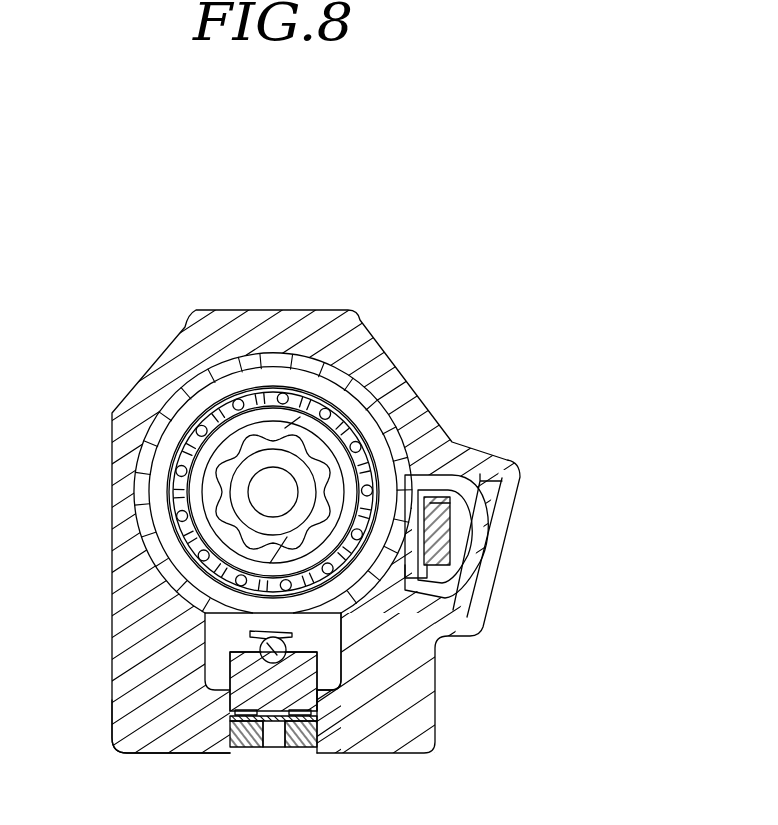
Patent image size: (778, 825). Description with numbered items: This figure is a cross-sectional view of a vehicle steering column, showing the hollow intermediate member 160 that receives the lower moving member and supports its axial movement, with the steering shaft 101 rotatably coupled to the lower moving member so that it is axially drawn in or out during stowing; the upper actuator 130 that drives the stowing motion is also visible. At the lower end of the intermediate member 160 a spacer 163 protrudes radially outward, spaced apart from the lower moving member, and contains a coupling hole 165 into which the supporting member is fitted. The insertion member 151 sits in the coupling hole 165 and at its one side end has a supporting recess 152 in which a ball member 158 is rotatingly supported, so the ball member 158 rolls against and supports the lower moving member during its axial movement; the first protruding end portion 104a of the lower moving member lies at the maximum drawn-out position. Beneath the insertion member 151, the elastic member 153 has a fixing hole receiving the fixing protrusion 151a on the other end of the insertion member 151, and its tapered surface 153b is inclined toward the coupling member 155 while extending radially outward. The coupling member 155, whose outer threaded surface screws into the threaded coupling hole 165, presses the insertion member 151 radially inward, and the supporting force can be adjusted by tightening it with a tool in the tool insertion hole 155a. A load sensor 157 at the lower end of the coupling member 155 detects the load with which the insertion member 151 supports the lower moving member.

The intermediate member 160 is at (150, 386).
The upper actuator 130 is at (382, 389).
The steering shaft 101 is at (305, 473).
The first protruding end portion 104a is at (255, 630).
The ball member 158 is at (290, 637).
The supporting recess 152 is at (268, 665).
The insertion member 151 is at (300, 672).
The fixing protrusion 151a is at (278, 708).
The elastic member 153 is at (155, 744).
The tapered surface 153b is at (228, 700).
The coupling member 155 is at (228, 733).
The tool insertion hole 155a is at (270, 740).
The load sensor 157 is at (292, 737).
The spacer 163 is at (120, 757).
The coupling hole 165 is at (320, 725).